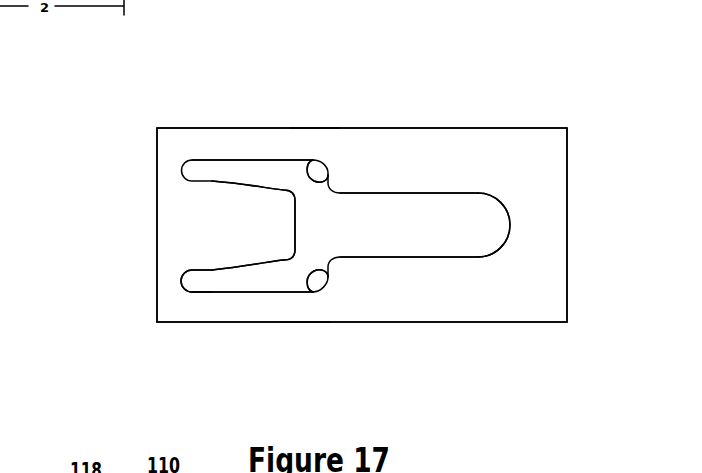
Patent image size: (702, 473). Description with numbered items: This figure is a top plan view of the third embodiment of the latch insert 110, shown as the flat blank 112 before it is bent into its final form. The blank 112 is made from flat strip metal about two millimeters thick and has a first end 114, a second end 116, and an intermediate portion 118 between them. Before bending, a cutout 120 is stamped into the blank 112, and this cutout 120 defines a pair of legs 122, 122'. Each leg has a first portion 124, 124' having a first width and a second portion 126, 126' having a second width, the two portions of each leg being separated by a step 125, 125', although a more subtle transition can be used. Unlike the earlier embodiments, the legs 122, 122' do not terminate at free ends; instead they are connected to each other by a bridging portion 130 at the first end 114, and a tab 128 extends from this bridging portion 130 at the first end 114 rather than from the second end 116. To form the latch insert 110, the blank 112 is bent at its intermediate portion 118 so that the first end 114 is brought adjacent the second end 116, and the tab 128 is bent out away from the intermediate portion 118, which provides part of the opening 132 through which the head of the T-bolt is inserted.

The latch insert 110 is at (548, 76).
The flat blank 112 is at (505, 128).
The first end 114 is at (157, 225).
The second end 116 is at (567, 223).
The intermediate portion 118 is at (373, 305).
The cutout 120 is at (407, 193).
The leg 122 is at (281, 344).
The leg 122' is at (315, 74).
The first portion 124 is at (409, 324).
The first portion 124' is at (409, 117).
The step 125 is at (326, 325).
The step 125' is at (342, 125).
The second portion 126 is at (239, 344).
The second portion 126' is at (252, 106).
The tab 128 is at (244, 182).
The bridging portion 130 is at (167, 280).
The opening 132 is at (358, 233).